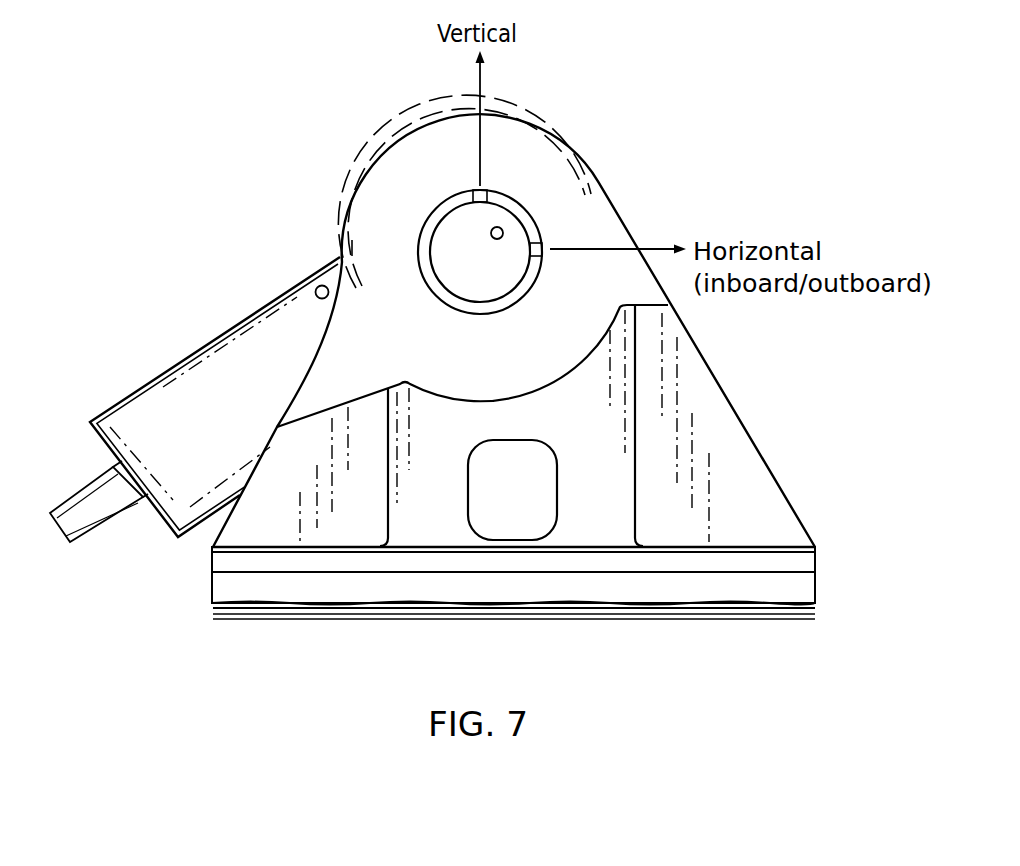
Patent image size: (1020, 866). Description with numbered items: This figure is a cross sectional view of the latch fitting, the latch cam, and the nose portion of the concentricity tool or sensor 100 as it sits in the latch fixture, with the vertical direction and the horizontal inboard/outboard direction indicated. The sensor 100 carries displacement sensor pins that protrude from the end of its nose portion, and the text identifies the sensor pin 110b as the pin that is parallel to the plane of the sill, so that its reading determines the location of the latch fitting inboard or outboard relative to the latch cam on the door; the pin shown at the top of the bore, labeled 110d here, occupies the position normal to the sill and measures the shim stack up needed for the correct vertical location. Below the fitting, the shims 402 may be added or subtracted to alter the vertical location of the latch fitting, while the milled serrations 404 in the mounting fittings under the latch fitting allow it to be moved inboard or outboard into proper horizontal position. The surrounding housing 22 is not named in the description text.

The housing 22 is at (237, 535).
The concentricity tool or sensor 100 is at (90, 436).
The displacement sensor pin 110b is at (536, 266).
The sensor at vertical position 110d is at (466, 198).
The shims 402 is at (826, 613).
The milled serrations 404 is at (474, 602).